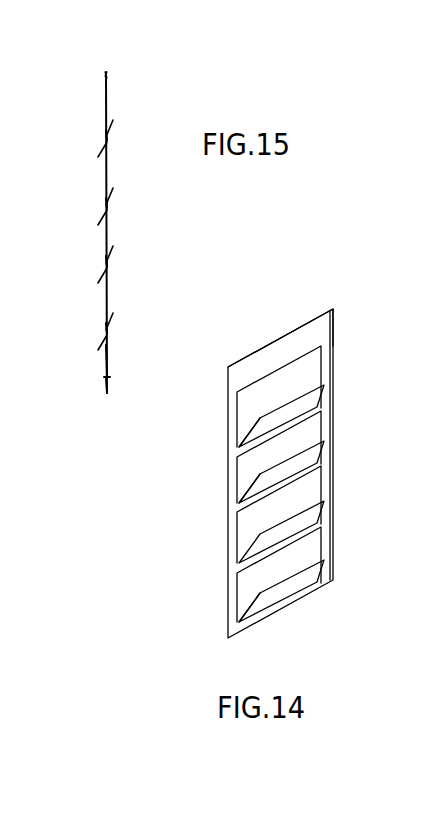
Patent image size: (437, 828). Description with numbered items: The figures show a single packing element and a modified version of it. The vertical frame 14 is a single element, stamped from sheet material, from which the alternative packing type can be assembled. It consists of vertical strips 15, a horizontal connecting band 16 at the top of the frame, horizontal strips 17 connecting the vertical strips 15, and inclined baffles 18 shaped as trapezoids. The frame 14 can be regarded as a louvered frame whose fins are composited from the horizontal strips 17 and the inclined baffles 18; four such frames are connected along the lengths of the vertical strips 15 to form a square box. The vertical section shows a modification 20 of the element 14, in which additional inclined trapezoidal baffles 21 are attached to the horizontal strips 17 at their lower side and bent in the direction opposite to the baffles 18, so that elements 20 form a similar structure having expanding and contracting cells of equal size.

In FIG. 14, the vertical frame 14 is at (318, 333).
In FIG. 15, the vertical strips 15 is at (108, 363).
In FIG. 14, the vertical strips 15 is at (303, 477).
In FIG. 15, the horizontal connecting band 16 is at (105, 75).
In FIG. 14, the horizontal connecting band 16 is at (272, 355).
In FIG. 15, the horizontal strips 17 is at (105, 137).
In FIG. 14, the horizontal strips 17 is at (296, 602).
In FIG. 15, the inclined baffles 18 is at (108, 128).
In FIG. 14, the inclined baffles 18 is at (277, 418).
In FIG. 15, the modification of the element 20 is at (108, 385).
In FIG. 15, the additional inclined trapezoidal baffles 21 is at (98, 152).